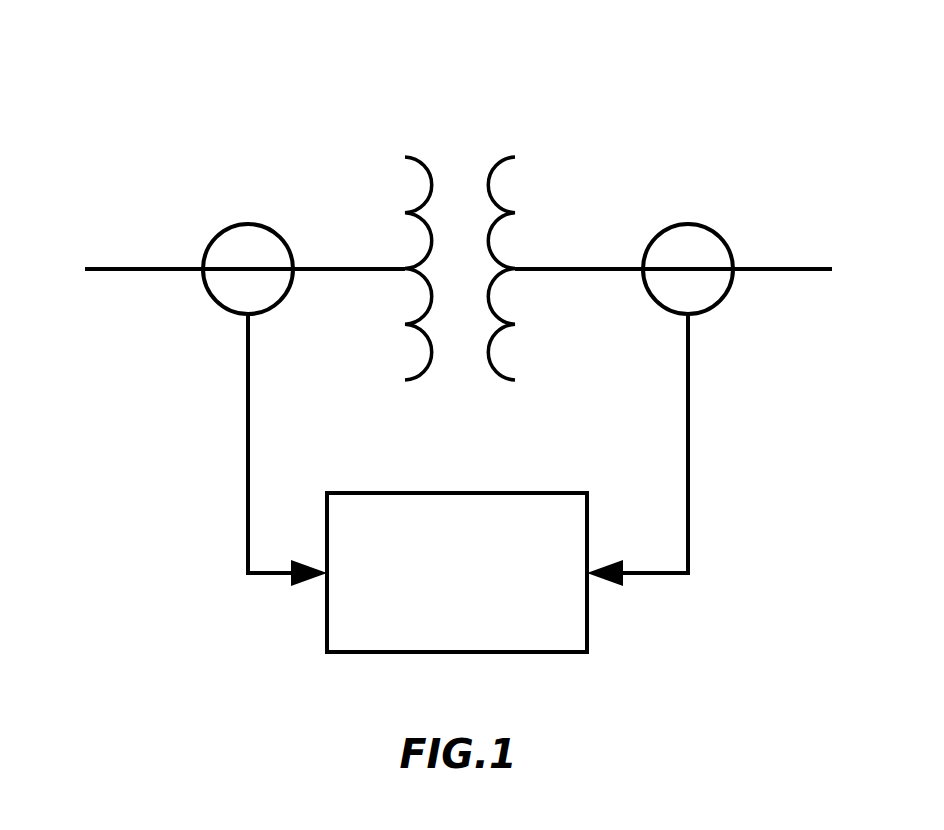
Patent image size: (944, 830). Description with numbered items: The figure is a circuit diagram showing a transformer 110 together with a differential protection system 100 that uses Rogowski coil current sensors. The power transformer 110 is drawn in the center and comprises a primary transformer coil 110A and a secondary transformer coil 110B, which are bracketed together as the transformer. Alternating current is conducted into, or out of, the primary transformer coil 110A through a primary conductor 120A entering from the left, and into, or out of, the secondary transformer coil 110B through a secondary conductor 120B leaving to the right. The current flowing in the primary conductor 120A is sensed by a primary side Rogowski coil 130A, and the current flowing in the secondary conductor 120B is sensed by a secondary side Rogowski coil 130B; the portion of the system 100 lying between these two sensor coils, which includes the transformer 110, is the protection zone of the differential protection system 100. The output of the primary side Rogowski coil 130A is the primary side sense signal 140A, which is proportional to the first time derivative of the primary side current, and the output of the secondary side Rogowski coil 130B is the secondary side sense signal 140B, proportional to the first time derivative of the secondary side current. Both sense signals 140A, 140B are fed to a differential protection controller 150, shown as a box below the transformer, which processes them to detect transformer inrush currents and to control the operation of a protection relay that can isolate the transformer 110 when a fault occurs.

The differential protection system 100 is at (149, 51).
The transformer 110 is at (530, 113).
The primary transformer coil 110A is at (411, 418).
The secondary transformer coil 110B is at (505, 418).
The primary conductor 120A is at (108, 267).
The secondary conductor 120B is at (813, 268).
The primary side Rogowski coil 130A is at (215, 236).
The secondary side Rogowski coil 130B is at (718, 234).
The primary side sense signal 140A is at (246, 436).
The secondary side sense signal 140B is at (690, 448).
The differential protection controller 150 is at (432, 588).